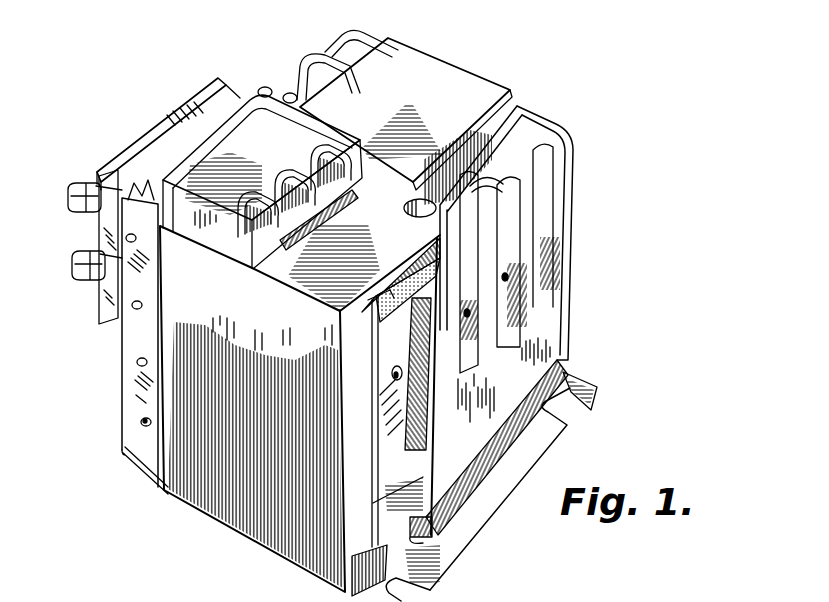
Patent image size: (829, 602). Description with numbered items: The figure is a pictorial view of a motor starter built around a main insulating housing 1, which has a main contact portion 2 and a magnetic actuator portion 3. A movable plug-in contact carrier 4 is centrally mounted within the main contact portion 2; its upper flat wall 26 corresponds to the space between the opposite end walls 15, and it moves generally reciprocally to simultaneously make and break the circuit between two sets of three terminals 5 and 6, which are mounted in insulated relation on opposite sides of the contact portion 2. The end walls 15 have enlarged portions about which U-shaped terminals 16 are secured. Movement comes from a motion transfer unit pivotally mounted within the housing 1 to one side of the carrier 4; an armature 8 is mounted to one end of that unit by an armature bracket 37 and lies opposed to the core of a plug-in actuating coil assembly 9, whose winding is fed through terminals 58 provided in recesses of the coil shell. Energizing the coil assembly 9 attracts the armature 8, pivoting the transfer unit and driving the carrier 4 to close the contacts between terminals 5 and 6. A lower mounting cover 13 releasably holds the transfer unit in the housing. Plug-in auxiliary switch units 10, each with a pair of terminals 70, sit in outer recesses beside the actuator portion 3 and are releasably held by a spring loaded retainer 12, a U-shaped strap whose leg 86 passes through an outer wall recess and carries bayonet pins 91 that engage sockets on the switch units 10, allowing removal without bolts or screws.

The main insulating housing 1 is at (240, 528).
The main contact portion 2 is at (267, 69).
The magnetic actuator portion 3 is at (145, 135).
The movable plug-in contact carrier 4 is at (468, 71).
The terminals 5 is at (511, 183).
The terminals 6 is at (290, 92).
The armature 8 is at (402, 282).
The plug-in actuating coil assembly 9 is at (233, 238).
The plug-in auxiliary switch units 10 is at (100, 292).
The spring loaded retainer 12 is at (137, 333).
The lower mounting cover 13 is at (470, 524).
The end walls 15 is at (480, 133).
The U-shaped terminals 16 is at (512, 262).
The upper flat wall 26 is at (414, 66).
The armature bracket 37 is at (416, 440).
The terminals 58 is at (366, 230).
The terminals 70 is at (68, 195).
The leg 86 is at (137, 384).
The bayonet pins 91 is at (143, 421).